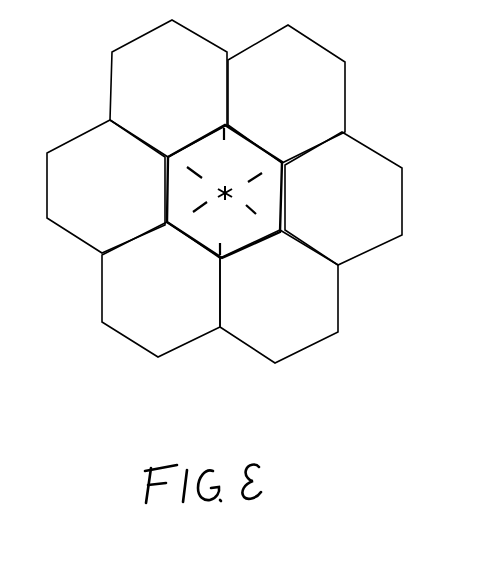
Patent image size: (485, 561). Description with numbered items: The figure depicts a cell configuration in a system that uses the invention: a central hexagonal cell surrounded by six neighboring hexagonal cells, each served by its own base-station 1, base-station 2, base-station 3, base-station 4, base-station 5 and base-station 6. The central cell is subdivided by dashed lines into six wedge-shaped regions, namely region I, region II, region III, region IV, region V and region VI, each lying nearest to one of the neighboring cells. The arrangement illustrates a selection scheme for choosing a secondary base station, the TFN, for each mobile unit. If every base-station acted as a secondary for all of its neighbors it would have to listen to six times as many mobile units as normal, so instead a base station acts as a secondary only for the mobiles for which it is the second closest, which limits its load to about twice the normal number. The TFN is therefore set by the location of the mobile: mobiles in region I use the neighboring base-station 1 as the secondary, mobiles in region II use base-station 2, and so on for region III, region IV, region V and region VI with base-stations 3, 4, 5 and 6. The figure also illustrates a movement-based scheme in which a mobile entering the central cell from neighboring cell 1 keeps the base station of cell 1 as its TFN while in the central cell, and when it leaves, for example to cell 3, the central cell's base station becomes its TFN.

The base-station 1 is at (106, 186).
The base-station 2 is at (168, 88).
The base-station 3 is at (286, 94).
The base-station 4 is at (343, 198).
The base-station 5 is at (279, 296).
The base-station 6 is at (161, 289).
The region I is at (188, 185).
The region II is at (213, 151).
The region III is at (259, 163).
The region IV is at (267, 195).
The region V is at (242, 228).
The region VI is at (206, 221).